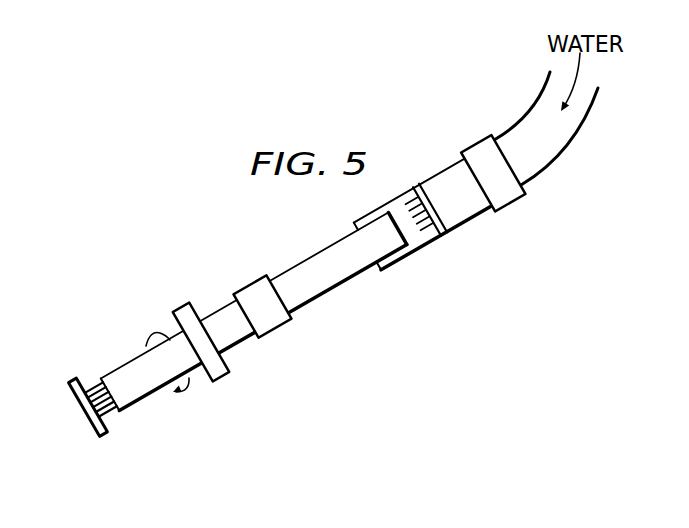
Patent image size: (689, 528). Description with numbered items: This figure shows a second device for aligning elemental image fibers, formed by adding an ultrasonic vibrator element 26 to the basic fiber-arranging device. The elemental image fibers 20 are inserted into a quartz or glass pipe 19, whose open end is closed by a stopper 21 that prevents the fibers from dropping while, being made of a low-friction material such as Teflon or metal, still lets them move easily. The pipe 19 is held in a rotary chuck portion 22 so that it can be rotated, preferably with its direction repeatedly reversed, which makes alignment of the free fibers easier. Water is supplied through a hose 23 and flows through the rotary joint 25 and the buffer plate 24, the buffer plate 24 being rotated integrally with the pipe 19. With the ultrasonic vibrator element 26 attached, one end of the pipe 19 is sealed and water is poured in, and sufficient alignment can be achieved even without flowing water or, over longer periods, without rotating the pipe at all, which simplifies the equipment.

The quartz or glass pipe 19 is at (150, 390).
The elemental image fiber 20 is at (112, 422).
The stopper 21 is at (85, 414).
The rotary chuck portion 22 is at (223, 375).
The hose 23 is at (468, 222).
The buffer plate 24 is at (443, 232).
The rotary joint 25 is at (512, 205).
The ultrasonic vibrator element 26 is at (277, 320).